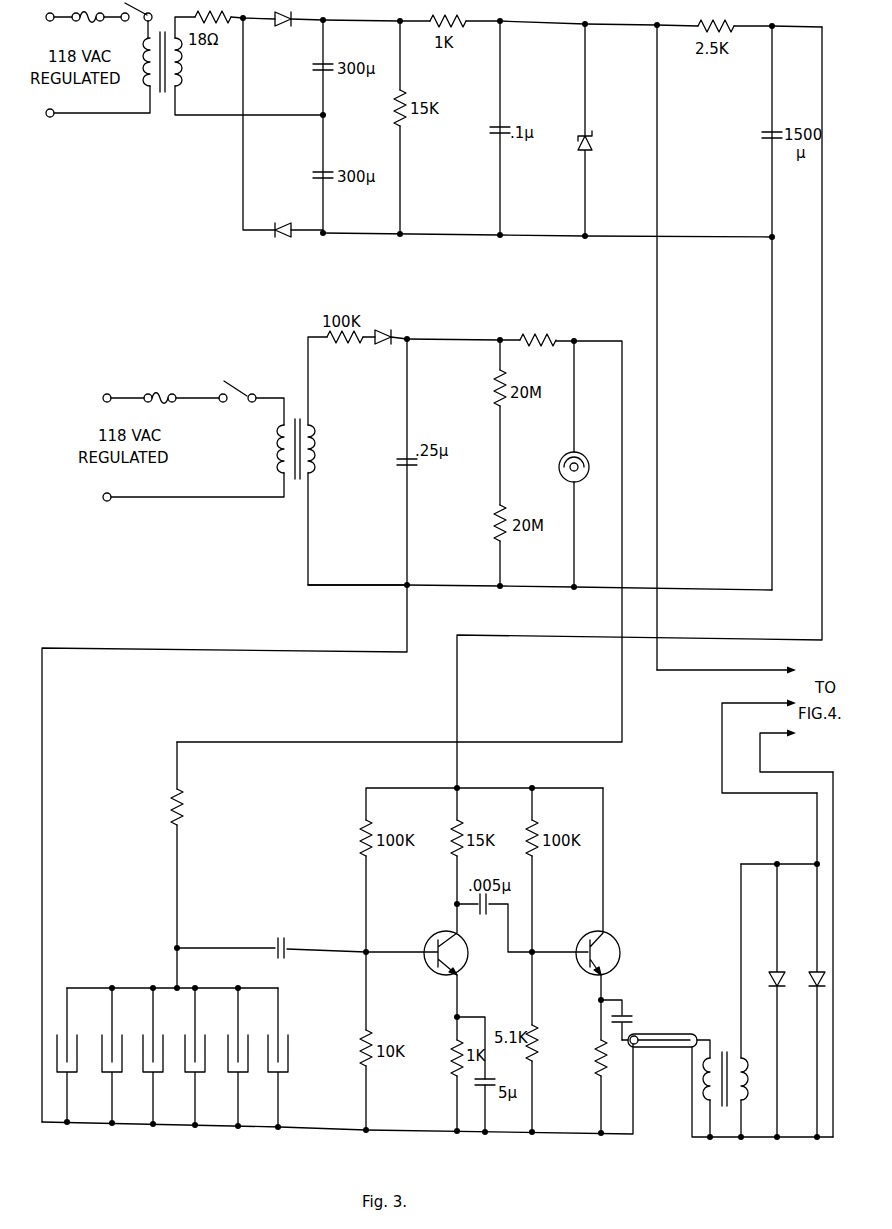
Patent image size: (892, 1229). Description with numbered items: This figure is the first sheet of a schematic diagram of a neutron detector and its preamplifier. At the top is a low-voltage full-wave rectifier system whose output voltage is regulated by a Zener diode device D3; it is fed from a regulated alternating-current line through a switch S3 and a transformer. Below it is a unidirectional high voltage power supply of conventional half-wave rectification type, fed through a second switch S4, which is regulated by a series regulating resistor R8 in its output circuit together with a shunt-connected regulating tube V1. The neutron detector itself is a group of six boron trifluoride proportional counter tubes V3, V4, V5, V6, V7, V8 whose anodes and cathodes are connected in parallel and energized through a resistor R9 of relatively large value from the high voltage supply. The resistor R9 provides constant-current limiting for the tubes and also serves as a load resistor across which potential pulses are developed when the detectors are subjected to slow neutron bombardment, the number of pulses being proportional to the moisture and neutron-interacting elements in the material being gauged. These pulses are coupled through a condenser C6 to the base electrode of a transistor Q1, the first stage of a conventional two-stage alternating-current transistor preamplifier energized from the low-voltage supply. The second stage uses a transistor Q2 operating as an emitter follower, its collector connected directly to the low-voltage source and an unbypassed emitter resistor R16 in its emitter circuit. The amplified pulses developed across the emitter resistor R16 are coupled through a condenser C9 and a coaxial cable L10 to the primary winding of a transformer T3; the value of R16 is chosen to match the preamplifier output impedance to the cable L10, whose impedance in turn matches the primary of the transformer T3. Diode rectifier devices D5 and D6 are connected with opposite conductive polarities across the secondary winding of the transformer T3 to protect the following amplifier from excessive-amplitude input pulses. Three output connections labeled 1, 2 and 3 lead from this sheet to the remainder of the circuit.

The power switch S3 is at (132, 25).
The power switch S4 is at (237, 402).
The Zener diode device D3 is at (593, 146).
The series regulating resistor R8 is at (530, 346).
The shunt-connected regulating tube V1 is at (587, 460).
The resistor R9 is at (183, 822).
The condenser C6 is at (286, 960).
The transistor Q1 is at (470, 953).
The transistor Q2 is at (620, 938).
The condenser C9 is at (634, 1020).
The emitter resistor R16 is at (596, 1066).
The coaxial cable L10 is at (647, 1047).
The transformer T3 is at (727, 1052).
The diode rectifier device D5 is at (774, 972).
The diode rectifier device D6 is at (812, 972).
The boron trifluoride proportional counter tube V3 is at (77, 1072).
The boron trifluoride proportional counter tube V4 is at (122, 1072).
The boron trifluoride proportional counter tube V5 is at (163, 1072).
The boron trifluoride proportional counter tube V6 is at (205, 1072).
The boron trifluoride proportional counter tube V7 is at (248, 1072).
The boron trifluoride proportional counter tube V8 is at (288, 1072).
The connection to FIG. 4 1 is at (755, 668).
The connection to FIG. 4 2 is at (758, 700).
The connection to FIG. 4 3 is at (767, 730).